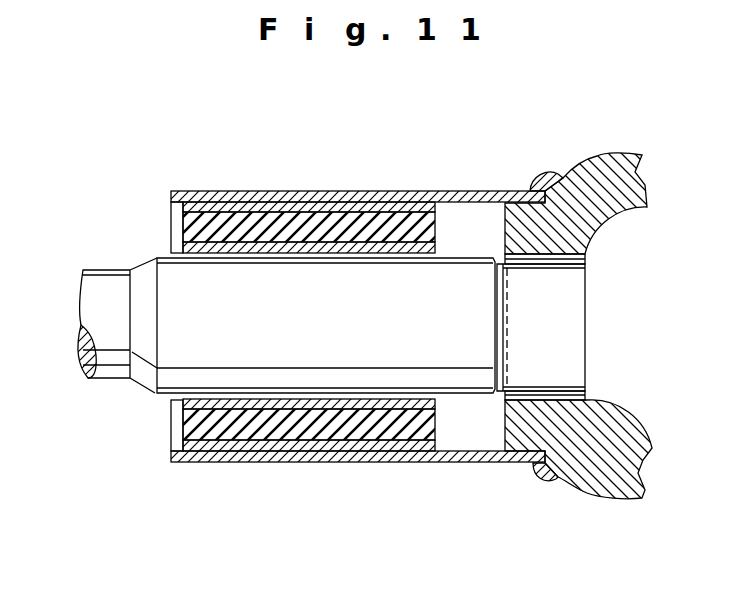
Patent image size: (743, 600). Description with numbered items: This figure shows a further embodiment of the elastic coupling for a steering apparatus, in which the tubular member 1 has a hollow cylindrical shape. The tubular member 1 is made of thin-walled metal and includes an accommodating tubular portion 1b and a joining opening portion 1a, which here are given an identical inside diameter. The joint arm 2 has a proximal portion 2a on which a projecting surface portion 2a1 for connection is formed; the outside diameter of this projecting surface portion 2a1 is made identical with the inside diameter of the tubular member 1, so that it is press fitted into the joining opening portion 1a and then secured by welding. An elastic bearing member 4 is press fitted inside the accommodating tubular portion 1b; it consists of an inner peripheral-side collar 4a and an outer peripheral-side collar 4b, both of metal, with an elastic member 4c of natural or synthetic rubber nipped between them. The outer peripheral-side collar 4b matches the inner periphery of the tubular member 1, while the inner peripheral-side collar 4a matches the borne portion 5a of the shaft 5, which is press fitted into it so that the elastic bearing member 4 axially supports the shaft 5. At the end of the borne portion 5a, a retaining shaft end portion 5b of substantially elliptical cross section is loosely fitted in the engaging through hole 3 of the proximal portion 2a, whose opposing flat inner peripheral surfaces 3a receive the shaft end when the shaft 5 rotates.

The tubular member 1 is at (272, 188).
The joining opening portion 1a is at (515, 463).
The accommodating tubular portion 1b is at (382, 191).
The joint arm 2 is at (596, 293).
The proximal portion 2a is at (577, 437).
The projecting surface portion for connection 2a1 is at (500, 226).
The engaging through hole 3 is at (604, 318).
The flat inner peripheral surfaces 3a is at (523, 258).
The elastic bearing member 4 is at (271, 362).
The inner peripheral-side collar 4a is at (242, 402).
The outer peripheral-side collar 4b is at (222, 447).
The elastic member 4c is at (195, 398).
The shaft 5 is at (366, 295).
The borne portion 5a is at (455, 293).
The retaining shaft end portion 5b is at (567, 311).